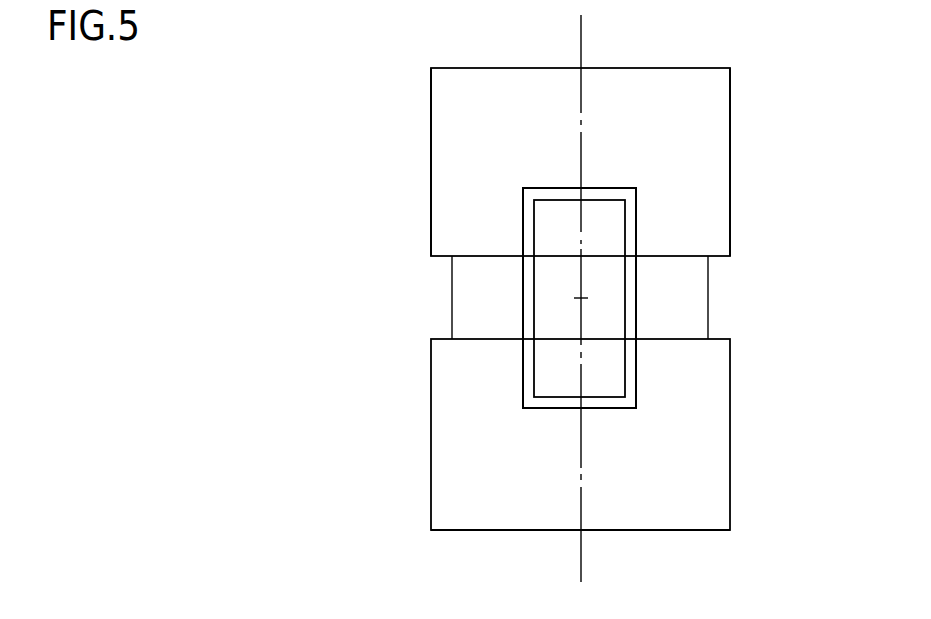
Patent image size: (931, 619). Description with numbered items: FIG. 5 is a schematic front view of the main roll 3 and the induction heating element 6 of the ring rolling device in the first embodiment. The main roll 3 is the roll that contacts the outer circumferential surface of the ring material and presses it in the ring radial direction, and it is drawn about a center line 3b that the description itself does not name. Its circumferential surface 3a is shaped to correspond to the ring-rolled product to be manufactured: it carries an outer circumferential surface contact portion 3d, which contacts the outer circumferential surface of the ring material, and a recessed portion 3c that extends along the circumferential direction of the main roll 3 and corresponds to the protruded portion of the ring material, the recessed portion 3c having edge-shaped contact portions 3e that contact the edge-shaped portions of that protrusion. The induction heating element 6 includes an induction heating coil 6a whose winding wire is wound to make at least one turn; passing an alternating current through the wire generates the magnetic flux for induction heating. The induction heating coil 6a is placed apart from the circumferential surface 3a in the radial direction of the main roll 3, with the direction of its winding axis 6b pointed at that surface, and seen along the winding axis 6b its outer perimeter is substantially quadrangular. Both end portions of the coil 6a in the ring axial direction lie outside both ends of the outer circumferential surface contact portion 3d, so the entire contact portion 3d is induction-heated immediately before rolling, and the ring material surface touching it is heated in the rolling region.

The main roll 3 is at (577, 294).
The circumferential surface of the main roll 3a is at (431, 107).
The center axis of holder 3b is at (581, 48).
The recessed portion 3c is at (677, 320).
The outer circumferential surface contact portion 3d is at (697, 208).
The edge-shaped contact portions 3e is at (708, 258).
The induction heating element 6 is at (502, 293).
The induction heating coil 6a is at (528, 297).
The winding axis 6b is at (576, 299).